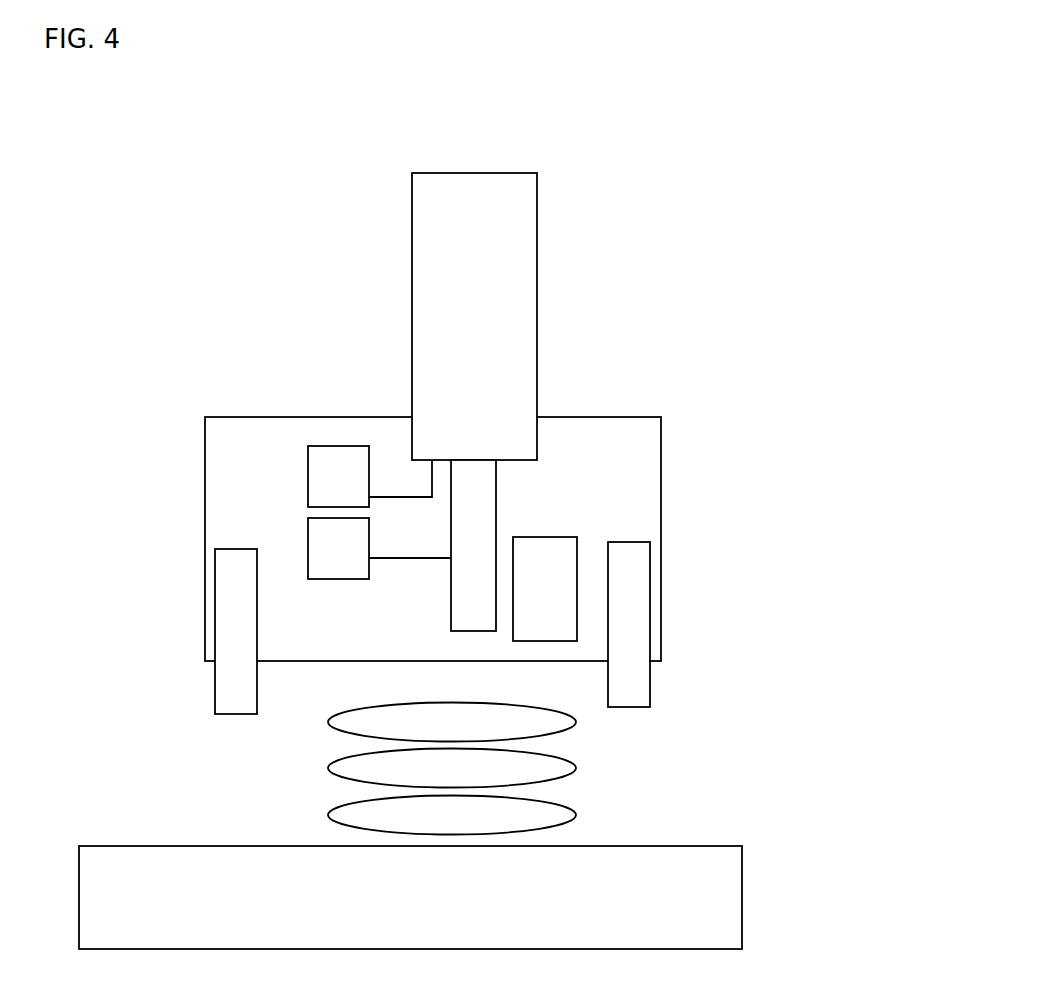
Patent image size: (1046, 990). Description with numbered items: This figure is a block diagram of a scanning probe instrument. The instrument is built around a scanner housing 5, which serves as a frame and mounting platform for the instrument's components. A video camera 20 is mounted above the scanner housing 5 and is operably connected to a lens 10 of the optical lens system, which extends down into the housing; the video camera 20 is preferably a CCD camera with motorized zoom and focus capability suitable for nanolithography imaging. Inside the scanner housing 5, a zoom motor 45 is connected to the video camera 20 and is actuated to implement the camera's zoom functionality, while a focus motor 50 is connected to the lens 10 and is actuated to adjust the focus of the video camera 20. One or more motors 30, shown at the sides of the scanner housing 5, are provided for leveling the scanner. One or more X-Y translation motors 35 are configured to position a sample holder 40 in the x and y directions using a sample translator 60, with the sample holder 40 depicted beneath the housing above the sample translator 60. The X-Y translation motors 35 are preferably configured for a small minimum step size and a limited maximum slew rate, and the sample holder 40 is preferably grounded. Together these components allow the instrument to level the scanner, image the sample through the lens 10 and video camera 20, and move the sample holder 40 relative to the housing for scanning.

The scanner housing 5 is at (661, 476).
The lens 10 is at (495, 497).
The video camera 20 is at (537, 268).
The motors for leveling the scanner 30 is at (215, 558).
The X-Y translation motors 35 is at (545, 589).
The sample holder 40 is at (452, 769).
The zoom motor 45 is at (370, 476).
The focus motor 50 is at (379, 548).
The sample translator 60 is at (410, 897).